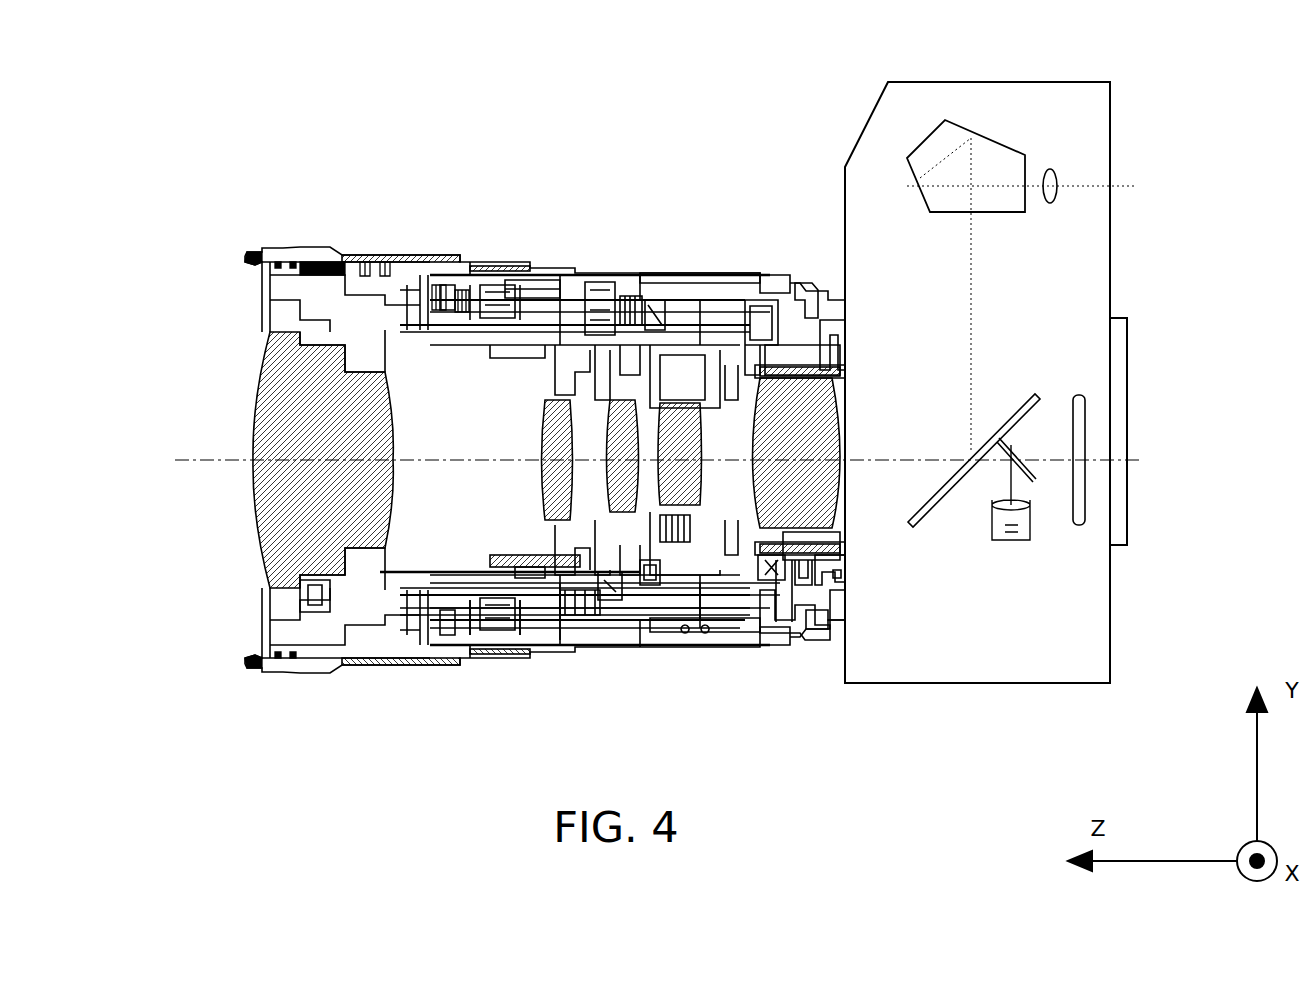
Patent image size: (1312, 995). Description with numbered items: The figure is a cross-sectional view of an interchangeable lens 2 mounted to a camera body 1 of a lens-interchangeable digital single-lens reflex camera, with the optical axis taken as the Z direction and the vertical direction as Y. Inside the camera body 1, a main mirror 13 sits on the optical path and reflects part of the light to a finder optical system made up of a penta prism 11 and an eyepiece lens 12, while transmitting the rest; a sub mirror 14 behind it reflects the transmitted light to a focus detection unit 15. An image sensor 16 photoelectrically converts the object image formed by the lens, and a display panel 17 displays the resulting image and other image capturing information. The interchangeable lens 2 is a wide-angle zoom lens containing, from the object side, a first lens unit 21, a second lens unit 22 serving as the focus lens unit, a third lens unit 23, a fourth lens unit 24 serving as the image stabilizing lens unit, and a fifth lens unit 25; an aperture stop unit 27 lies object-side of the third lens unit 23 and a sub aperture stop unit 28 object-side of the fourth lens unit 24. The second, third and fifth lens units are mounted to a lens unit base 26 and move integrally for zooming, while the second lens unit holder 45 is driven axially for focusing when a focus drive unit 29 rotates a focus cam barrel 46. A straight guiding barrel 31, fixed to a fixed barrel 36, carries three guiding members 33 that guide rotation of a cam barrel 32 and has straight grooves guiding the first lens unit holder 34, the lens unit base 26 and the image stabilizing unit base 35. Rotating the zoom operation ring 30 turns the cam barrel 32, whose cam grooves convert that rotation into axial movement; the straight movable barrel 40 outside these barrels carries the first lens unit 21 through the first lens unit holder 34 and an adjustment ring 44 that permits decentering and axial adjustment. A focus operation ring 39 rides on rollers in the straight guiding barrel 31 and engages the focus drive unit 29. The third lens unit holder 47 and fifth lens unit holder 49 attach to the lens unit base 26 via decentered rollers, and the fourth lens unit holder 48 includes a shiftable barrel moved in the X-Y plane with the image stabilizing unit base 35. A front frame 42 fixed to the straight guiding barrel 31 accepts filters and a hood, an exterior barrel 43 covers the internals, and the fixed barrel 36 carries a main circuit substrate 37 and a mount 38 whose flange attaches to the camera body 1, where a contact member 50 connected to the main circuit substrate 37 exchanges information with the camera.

The camera body 1 is at (898, 82).
The interchangeable lens 2 is at (225, 258).
The penta prism 11 is at (955, 122).
The eyepiece lens 12 is at (1049, 169).
The main mirror 13 is at (948, 505).
The sub mirror 14 is at (1037, 487).
The focus detection unit 15 is at (1022, 540).
The image sensor 16 is at (1086, 548).
The display panel 17 is at (1113, 548).
The first lens unit 21 is at (277, 353).
The second lens unit 22 is at (545, 425).
The third lens unit 23 is at (615, 440).
The fourth lens unit 24 is at (660, 455).
The fifth lens unit 25 is at (790, 487).
The lens unit base 26 is at (610, 600).
The aperture stop unit 27 is at (597, 282).
The sub aperture stop unit 28 is at (655, 345).
The focus drive unit 29 is at (580, 615).
The zoom operation ring 30 is at (713, 273).
The straight guiding barrel 31 is at (436, 285).
The cam barrel 32 is at (462, 290).
The guiding members 33 is at (745, 300).
The first lens unit holder 34 is at (318, 612).
The image stabilizing unit base 35 is at (650, 585).
The fixed barrel 36 is at (690, 632).
The main circuit substrate 37 is at (782, 560).
The mount 38 is at (818, 300).
The focus operation ring 39 is at (373, 262).
The straight movable barrel 40 is at (312, 247).
The front frame 42 is at (272, 668).
The exterior barrel 43 is at (522, 280).
The adjustment ring 44 is at (258, 248).
The second lens unit holder 45 is at (528, 578).
The focus cam barrel 46 is at (505, 567).
The third lens unit holder 47 is at (630, 296).
The fourth lens unit holder 48 is at (676, 542).
The fifth lens unit holder 49 is at (770, 580).
The contact member 50 is at (825, 629).